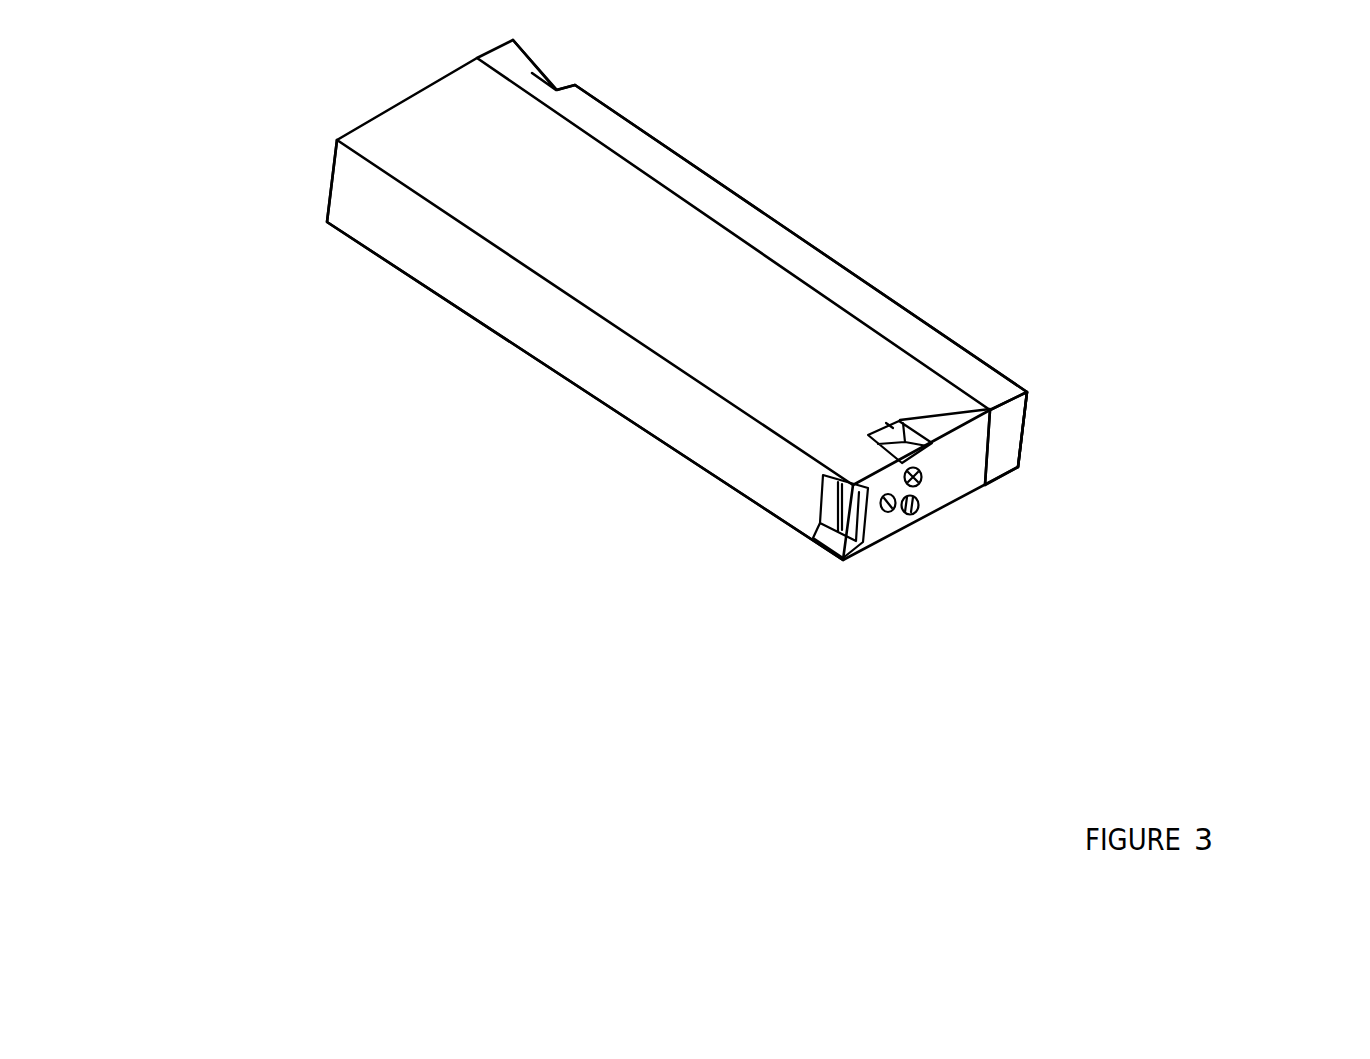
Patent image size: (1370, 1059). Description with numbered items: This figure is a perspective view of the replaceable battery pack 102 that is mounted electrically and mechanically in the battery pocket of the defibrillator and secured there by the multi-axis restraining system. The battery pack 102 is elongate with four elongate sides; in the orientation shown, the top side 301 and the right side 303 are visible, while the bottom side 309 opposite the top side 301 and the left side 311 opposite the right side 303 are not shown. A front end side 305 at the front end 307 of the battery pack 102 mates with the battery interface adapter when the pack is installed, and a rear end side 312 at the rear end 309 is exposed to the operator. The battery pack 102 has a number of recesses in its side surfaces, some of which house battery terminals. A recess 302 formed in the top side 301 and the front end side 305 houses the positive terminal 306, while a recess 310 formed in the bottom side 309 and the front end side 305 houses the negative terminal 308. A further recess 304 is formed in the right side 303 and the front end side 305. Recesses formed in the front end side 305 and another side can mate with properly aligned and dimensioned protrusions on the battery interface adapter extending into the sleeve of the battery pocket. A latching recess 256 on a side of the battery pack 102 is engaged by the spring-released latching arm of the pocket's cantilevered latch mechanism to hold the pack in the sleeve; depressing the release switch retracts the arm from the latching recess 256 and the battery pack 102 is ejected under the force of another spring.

The battery pack 102 is at (785, 365).
The latching recess 256 is at (554, 74).
The top side 301 is at (442, 83).
The recess 302 is at (903, 419).
The right side 303 is at (465, 282).
The recess 304 is at (823, 532).
The front end side 305 is at (967, 481).
The positive terminal 306 is at (926, 452).
The front end 307 is at (640, 619).
The negative terminal 308 is at (908, 523).
The bottom side 309 is at (252, 296).
The recess 310 is at (897, 530).
The left side 311 is at (687, 137).
The rear end side 312 is at (321, 180).